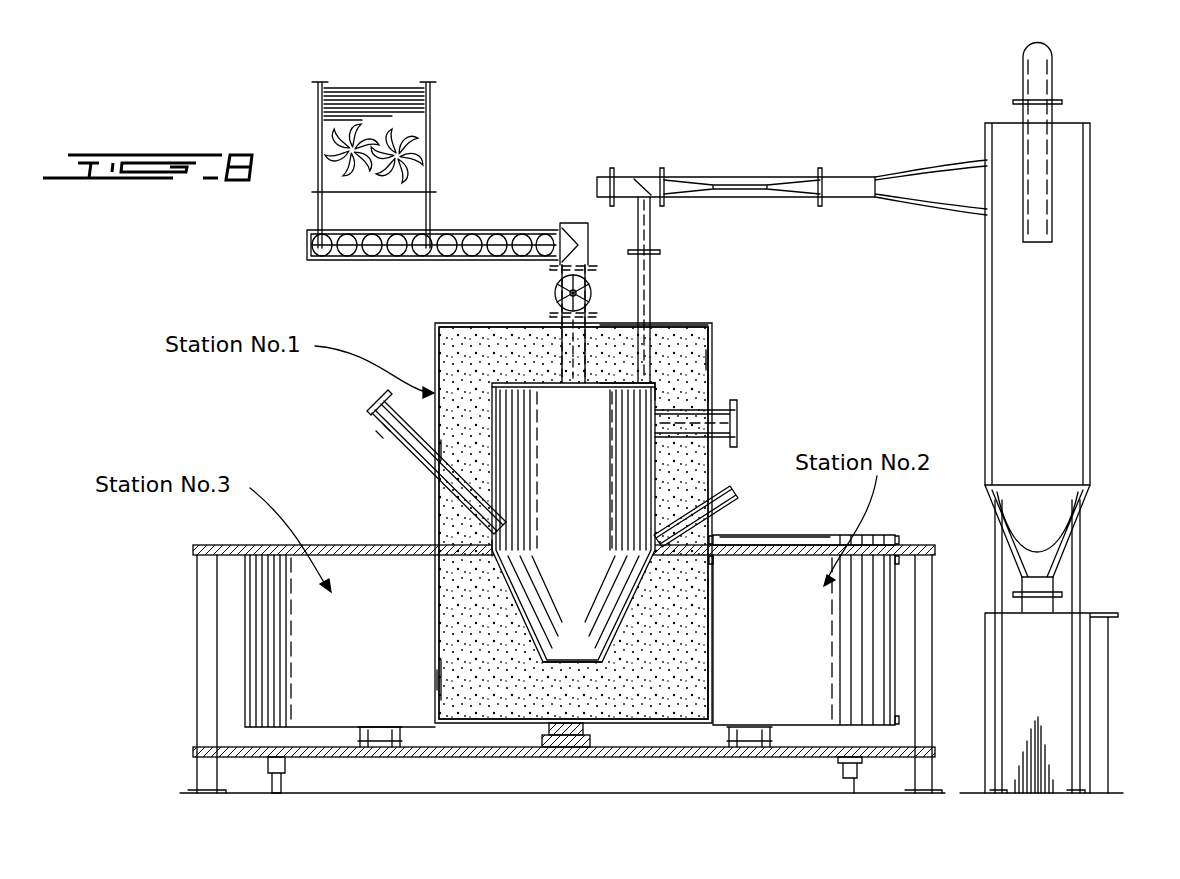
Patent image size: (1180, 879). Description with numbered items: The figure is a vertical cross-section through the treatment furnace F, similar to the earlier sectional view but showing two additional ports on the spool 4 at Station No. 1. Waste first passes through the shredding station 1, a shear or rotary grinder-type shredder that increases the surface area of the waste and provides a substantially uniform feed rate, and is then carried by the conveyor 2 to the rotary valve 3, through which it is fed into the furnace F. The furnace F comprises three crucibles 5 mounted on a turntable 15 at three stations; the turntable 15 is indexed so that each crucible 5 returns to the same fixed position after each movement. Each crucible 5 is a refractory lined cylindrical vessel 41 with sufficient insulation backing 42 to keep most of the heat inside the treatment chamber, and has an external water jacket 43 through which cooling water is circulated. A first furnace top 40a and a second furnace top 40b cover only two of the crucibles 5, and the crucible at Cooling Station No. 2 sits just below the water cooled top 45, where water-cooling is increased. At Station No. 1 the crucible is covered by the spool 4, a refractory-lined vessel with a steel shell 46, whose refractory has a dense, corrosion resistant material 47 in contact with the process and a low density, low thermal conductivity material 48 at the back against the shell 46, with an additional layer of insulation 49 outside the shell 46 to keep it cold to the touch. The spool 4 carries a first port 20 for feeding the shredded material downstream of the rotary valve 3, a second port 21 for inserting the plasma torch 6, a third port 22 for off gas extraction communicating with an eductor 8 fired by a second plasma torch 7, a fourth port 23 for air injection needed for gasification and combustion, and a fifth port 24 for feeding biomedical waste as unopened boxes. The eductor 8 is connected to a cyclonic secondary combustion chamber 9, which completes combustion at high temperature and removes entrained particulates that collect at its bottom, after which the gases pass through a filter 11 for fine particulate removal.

The shredding station 1 is at (430, 118).
The conveyor 2 is at (500, 228).
The rotary valve 3 is at (556, 293).
The spool 4 is at (712, 462).
The crucible 5 is at (713, 685).
The plasma torch 6 is at (375, 421).
The second plasma torch 7 is at (623, 186).
The eductor 8 is at (748, 180).
The cyclonic secondary combustion chamber 9 is at (1020, 337).
The filter 11 is at (1037, 718).
The turntable 15 is at (810, 752).
The first port 20 is at (575, 384).
The second port 21 is at (487, 537).
The third port 22 is at (655, 395).
The fourth port 23 is at (723, 510).
The fifth port 24 is at (710, 420).
The first furnace top 40a is at (712, 337).
The second furnace top 40b is at (885, 536).
The refractory lined cylindrical vessel 41 is at (290, 637).
The insulation backing 42 is at (463, 680).
The external water jacket 43 is at (713, 612).
The water cooled top 45 is at (810, 540).
The steel shell 46 is at (680, 322).
The dense corrosion resistant material 47 is at (462, 447).
The low density low thermal conductivity material 48 is at (698, 360).
The additional layer of insulation 49 is at (436, 416).
The treatment furnace F is at (436, 680).